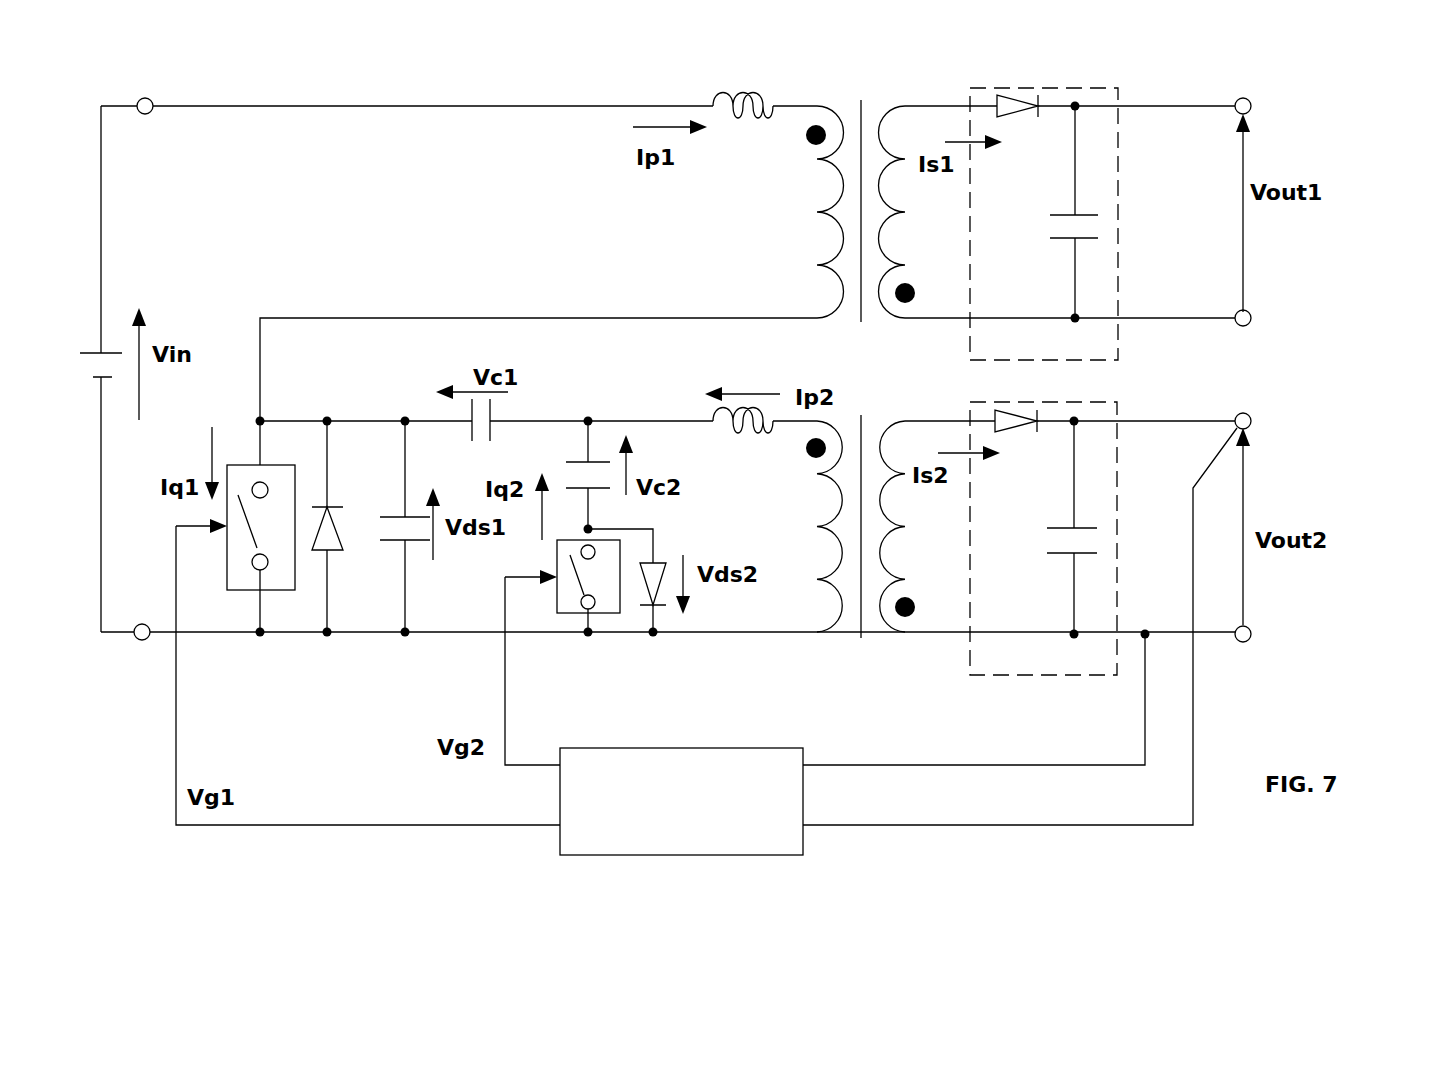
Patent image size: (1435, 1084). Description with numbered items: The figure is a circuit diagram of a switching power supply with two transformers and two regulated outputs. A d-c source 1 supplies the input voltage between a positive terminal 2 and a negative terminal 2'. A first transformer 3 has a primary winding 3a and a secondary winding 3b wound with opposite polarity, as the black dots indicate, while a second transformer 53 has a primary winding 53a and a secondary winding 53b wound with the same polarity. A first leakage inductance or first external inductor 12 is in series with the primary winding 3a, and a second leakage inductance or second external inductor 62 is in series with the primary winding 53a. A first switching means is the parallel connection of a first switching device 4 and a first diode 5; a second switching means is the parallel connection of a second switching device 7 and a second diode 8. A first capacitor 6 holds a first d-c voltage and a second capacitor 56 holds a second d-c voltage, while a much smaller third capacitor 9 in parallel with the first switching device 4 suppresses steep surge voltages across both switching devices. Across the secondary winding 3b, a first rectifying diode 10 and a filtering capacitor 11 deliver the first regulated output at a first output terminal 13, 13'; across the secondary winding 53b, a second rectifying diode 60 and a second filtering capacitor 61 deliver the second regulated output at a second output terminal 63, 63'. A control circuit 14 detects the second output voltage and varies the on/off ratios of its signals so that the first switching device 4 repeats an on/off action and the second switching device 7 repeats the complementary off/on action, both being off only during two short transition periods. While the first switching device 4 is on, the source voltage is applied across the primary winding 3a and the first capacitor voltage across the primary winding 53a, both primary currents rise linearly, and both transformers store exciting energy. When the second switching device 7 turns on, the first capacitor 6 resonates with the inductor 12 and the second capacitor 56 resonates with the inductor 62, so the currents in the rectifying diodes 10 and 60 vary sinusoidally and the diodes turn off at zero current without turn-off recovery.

The d-c source 1 is at (90, 372).
The positive terminal 2 is at (157, 133).
The negative terminal 2' is at (132, 667).
The first transformer 3 is at (824, 193).
The primary winding of first transformer 3a is at (812, 212).
The secondary winding of first transformer 3b is at (900, 140).
The first switching device 4 is at (275, 590).
The first diode 5 is at (335, 540).
The first capacitor 6 is at (470, 438).
The second switching device 7 is at (575, 614).
The second diode 8 is at (655, 606).
The third capacitor 9 is at (425, 548).
The first rectifying diode 10 is at (1012, 100).
The filtering capacitor 11 is at (1045, 228).
The first external inductor 12 is at (748, 100).
The first output terminal 13 is at (1219, 79).
The first output terminal 13' is at (1270, 330).
The control circuit 14 is at (770, 748).
The second transformer 53 is at (876, 557).
The primary winding of second transformer 53a is at (825, 620).
The secondary winding of second transformer 53b is at (903, 555).
The second capacitor 56 is at (606, 455).
The second rectifying diode 60 is at (1020, 428).
The second filtering capacitor 61 is at (1048, 540).
The second external inductor 62 is at (743, 432).
The second output terminal 63 is at (1223, 401).
The second output terminal 63' is at (1232, 663).